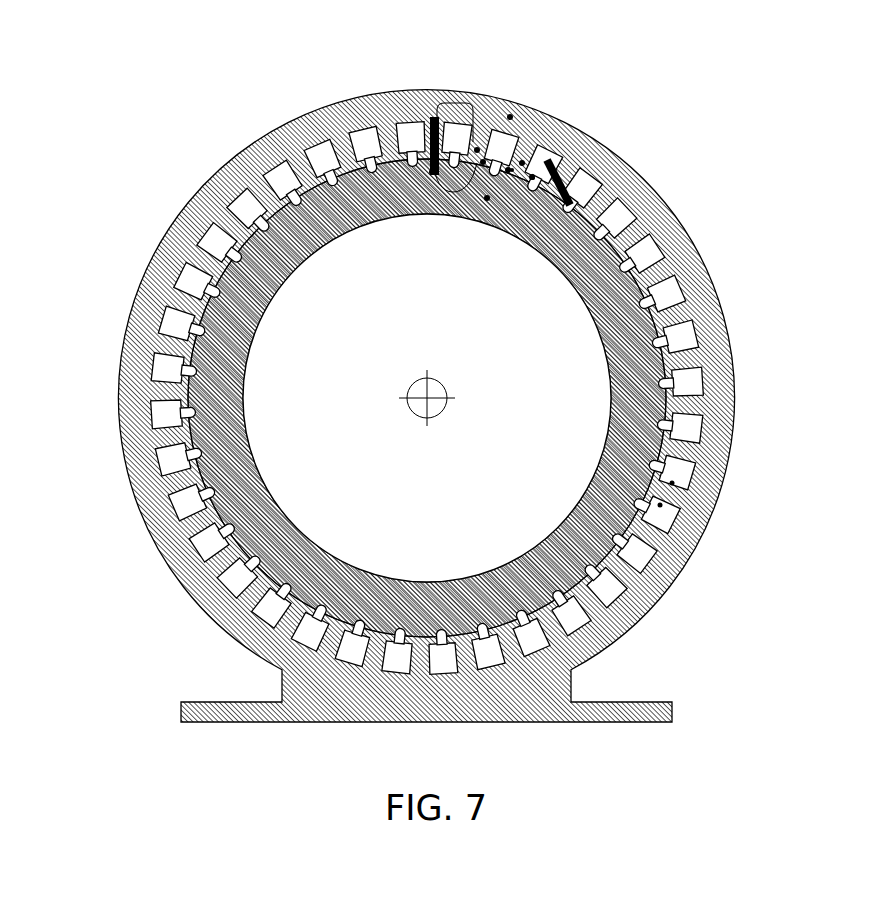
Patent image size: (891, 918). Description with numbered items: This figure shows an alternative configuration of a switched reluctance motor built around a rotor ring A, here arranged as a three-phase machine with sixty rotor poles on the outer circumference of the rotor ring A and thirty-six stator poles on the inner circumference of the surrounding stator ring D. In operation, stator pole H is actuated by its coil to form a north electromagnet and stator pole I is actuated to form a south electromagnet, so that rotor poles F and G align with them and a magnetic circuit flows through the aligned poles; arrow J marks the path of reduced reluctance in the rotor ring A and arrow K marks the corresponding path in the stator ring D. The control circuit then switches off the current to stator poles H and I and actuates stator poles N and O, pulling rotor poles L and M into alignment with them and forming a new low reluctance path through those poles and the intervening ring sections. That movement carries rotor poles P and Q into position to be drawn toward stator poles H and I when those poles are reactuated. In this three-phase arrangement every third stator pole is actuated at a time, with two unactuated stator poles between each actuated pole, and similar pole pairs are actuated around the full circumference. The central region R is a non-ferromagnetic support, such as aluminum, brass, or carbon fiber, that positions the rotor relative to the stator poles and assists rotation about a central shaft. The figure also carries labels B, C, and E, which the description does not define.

The rotor ring A is at (627, 332).
The stator tooth B is at (660, 355).
The housing C is at (713, 387).
The stator ring D is at (680, 403).
The slot windings E is at (700, 512).
The rotor pole F is at (432, 172).
The rotor pole G is at (505, 180).
The stator pole H is at (430, 120).
The stator pole I is at (530, 175).
The arrow J is at (487, 198).
The arrow K is at (510, 117).
The rotor pole L is at (480, 168).
The rotor pole M is at (533, 178).
The stator pole N is at (472, 150).
The stator pole O is at (553, 187).
The rotor pole P is at (447, 183).
The rotor pole Q is at (512, 170).
The central region R is at (310, 448).